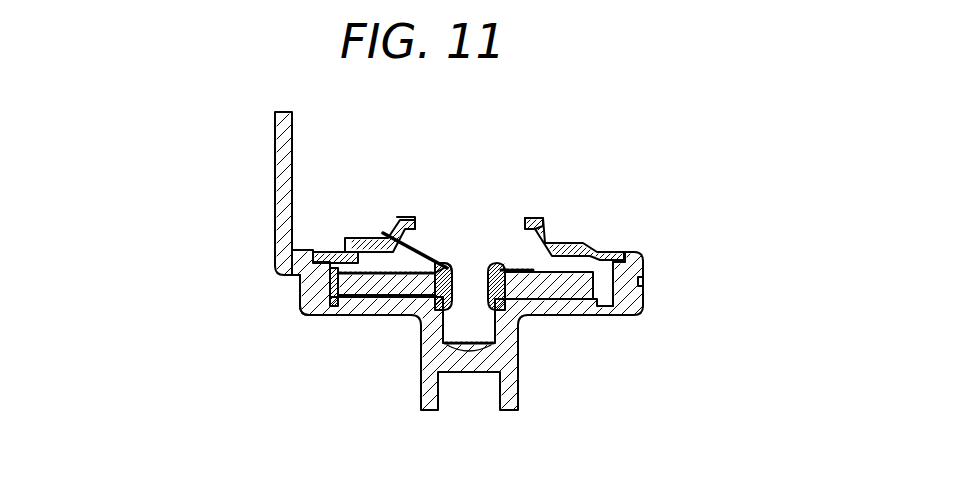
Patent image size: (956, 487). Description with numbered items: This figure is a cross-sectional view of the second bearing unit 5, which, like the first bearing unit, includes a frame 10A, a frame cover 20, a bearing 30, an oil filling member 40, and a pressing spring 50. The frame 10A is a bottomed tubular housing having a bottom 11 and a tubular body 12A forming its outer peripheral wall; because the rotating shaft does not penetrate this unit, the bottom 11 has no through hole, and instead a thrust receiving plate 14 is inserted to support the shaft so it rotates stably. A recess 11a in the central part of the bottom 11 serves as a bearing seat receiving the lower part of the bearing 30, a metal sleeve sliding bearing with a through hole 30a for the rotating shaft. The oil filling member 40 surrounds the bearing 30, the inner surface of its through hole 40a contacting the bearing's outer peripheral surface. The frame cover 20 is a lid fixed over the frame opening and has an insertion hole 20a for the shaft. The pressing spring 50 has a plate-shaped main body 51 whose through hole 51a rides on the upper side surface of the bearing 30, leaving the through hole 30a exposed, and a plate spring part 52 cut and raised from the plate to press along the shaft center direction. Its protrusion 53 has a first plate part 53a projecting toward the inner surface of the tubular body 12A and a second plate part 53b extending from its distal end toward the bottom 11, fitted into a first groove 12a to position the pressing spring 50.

The second bearing unit 5 is at (221, 131).
The frame 10A is at (733, 272).
The bottom 11 is at (558, 303).
The recess 11a is at (470, 343).
The tubular body 12A is at (625, 284).
The first groove 12a is at (303, 300).
The thrust receiving plate 14 is at (469, 312).
The frame cover 20 is at (537, 232).
The insertion hole 20a is at (531, 213).
The bearing 30 is at (436, 310).
The through hole 30a is at (465, 273).
The oil filling member 40 is at (540, 278).
The through hole 40a is at (508, 289).
The pressing spring 50 is at (120, 175).
The main body 51 is at (336, 289).
The through hole 51a is at (500, 264).
The plate spring part 52 is at (398, 254).
The protrusion 53 is at (179, 227).
The first plate part 53a is at (275, 251).
The second plate part 53b is at (330, 267).